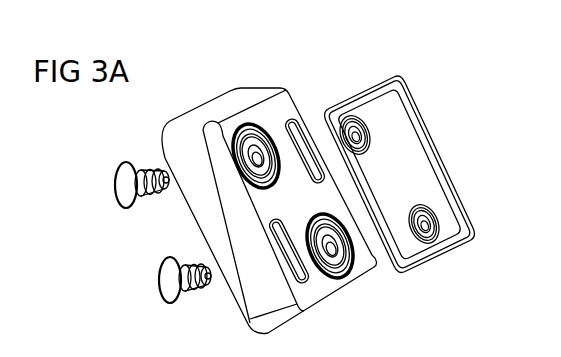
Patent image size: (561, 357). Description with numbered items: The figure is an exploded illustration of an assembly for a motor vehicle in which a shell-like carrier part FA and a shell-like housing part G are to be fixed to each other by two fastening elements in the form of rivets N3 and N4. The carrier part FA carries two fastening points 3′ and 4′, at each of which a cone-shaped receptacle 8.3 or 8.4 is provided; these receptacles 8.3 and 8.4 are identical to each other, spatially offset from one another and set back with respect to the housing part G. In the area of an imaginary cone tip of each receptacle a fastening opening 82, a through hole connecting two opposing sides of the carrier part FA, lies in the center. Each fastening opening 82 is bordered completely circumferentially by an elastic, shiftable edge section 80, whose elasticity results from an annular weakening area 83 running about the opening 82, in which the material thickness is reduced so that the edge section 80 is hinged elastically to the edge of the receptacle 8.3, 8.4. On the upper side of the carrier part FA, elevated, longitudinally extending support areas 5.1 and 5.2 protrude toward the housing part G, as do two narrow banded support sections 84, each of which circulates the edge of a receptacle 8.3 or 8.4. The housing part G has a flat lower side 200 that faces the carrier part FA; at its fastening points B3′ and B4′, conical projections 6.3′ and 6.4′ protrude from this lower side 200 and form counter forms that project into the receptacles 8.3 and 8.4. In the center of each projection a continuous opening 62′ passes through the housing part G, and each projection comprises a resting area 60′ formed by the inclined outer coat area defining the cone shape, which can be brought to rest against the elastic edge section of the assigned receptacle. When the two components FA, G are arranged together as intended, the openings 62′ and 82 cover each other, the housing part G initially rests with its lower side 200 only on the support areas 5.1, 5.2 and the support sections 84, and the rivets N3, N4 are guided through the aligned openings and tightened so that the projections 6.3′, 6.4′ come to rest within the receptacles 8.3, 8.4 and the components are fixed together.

The carrier part FA is at (227, 84).
The edge section 80 is at (250, 143).
The fastening point 3′ is at (252, 116).
The weakening area 83 is at (261, 128).
The fastening opening 82 is at (252, 162).
The receptacle 8.3 is at (255, 184).
The support section 84 is at (271, 184).
The support area 5.1 is at (291, 124).
The support area 5.2 is at (300, 289).
The fastening point 4′ is at (349, 287).
The receptacle 8.4 is at (360, 267).
The housing part G is at (422, 90).
The lower side 200 is at (346, 176).
The opening 62′ is at (347, 112).
The fastening point B3′ is at (360, 104).
The projection 6.3′ is at (370, 118).
The resting area 60′ is at (362, 138).
The projection 6.4′ is at (442, 212).
The fastening point B4′ is at (439, 241).
The rivet N3 is at (118, 168).
The rivet N4 is at (158, 286).